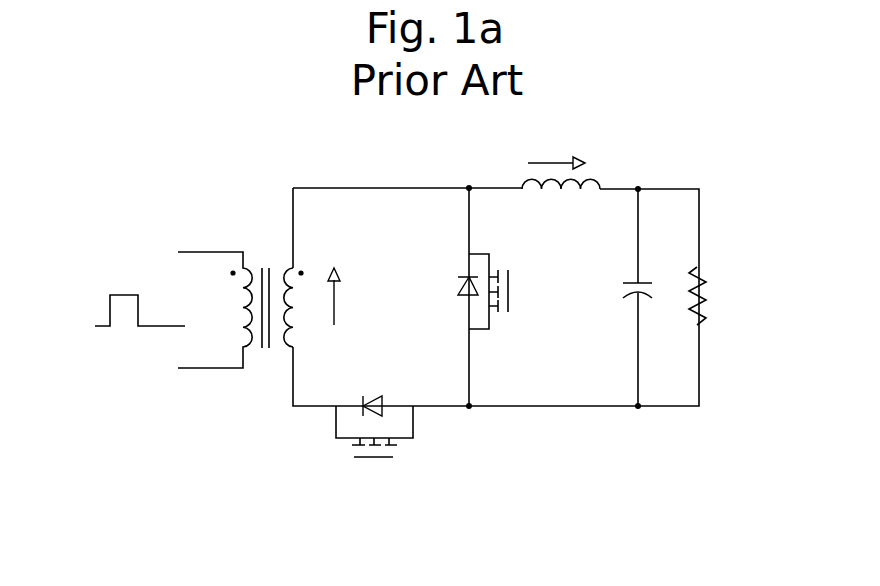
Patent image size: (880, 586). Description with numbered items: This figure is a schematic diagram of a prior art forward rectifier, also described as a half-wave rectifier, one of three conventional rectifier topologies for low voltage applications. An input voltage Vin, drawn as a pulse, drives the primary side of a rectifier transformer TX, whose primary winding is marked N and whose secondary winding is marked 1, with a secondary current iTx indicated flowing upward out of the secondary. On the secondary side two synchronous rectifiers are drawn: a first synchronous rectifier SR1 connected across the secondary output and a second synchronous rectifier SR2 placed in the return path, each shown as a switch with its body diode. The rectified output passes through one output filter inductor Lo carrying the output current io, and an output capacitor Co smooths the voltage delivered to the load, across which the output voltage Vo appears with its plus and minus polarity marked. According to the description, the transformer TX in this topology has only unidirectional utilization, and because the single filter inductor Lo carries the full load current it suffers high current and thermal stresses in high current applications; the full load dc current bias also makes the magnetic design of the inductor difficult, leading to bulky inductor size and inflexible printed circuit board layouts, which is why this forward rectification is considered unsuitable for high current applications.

The input voltage source Vin is at (119, 299).
The transformer TX is at (248, 295).
The primary winding (N turns) N is at (215, 310).
The secondary winding (1 turn) 1 is at (301, 307).
The transformer secondary current iTx is at (350, 296).
The synchronous rectifier 1 SR1 is at (508, 291).
The synchronous rectifier 2 SR2 is at (374, 450).
The output inductor Lo is at (561, 203).
The output current io is at (556, 146).
The output capacitor Co is at (622, 277).
The output voltage / load Vo is at (718, 297).